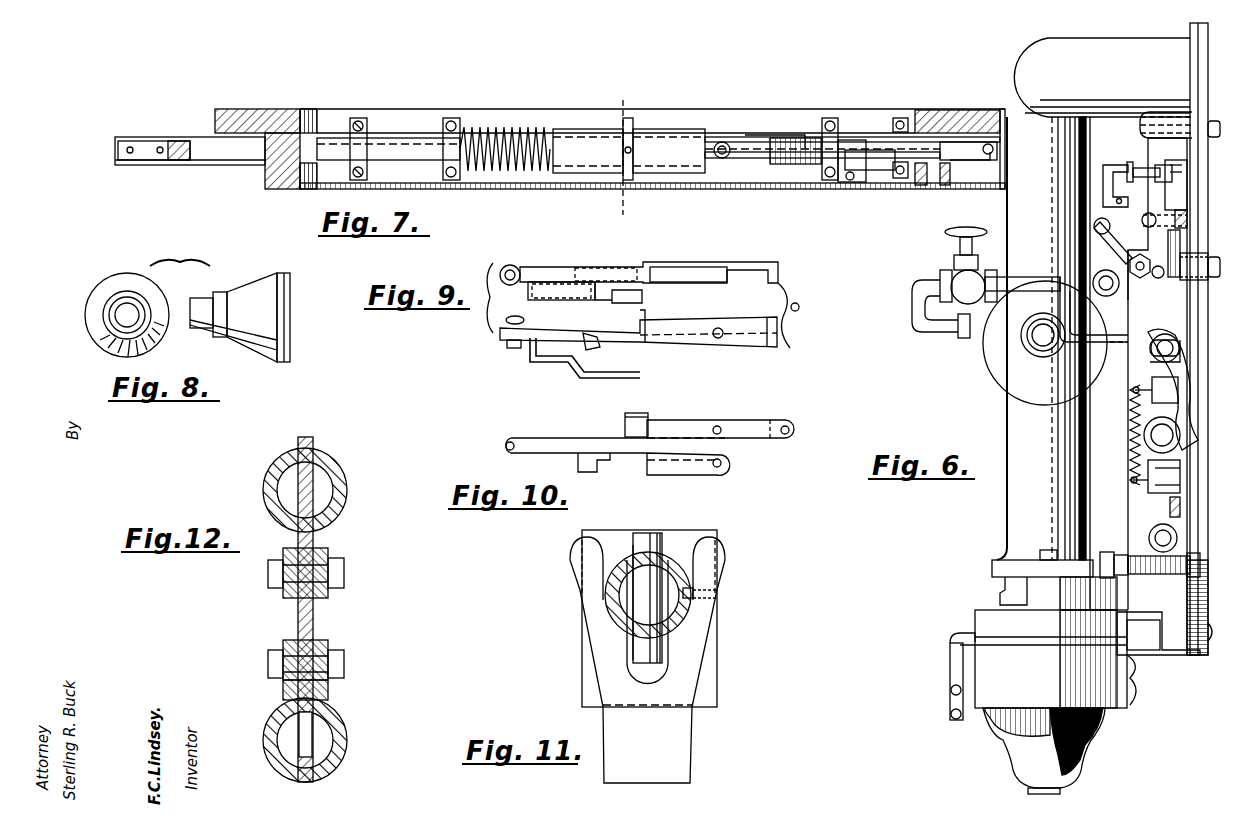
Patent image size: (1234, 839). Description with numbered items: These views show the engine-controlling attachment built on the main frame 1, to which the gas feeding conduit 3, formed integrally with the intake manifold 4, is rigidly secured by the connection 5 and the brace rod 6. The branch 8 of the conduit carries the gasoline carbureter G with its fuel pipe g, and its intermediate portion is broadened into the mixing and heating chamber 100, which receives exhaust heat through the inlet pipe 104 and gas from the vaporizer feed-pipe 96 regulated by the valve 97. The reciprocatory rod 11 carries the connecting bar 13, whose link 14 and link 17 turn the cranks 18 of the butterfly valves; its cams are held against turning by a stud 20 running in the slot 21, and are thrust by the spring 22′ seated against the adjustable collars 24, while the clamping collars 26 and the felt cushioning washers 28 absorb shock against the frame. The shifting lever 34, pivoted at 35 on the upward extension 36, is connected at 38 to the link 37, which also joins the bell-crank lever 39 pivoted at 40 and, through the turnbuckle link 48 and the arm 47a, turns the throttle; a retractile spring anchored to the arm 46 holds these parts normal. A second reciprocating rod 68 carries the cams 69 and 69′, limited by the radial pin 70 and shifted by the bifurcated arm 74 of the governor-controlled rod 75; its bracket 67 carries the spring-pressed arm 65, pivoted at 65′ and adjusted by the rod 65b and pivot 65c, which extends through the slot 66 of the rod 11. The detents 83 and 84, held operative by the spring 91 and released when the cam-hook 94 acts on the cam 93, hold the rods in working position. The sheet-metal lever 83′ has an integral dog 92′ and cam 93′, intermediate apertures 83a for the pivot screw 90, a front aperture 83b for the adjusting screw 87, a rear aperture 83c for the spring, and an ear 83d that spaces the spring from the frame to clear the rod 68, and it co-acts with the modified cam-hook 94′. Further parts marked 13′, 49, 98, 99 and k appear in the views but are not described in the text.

In FIG. 7, the main frame structure 1 is at (268, 118).
In FIG. 6, the main frame structure 1 is at (1195, 320).
In FIG. 6, the gas feeding conduit 3 is at (1005, 413).
In FIG. 6, the intake manifold 4 is at (1102, 77).
In FIG. 6, the connection 5 is at (1127, 640).
In FIG. 6, the brace rod 6 is at (1116, 241).
In FIG. 6, the branch of conduit 8 is at (1062, 363).
In FIG. 12, the reciprocatory rod 11 is at (343, 480).
In FIG. 6, the reciprocatory rod 11 is at (1158, 365).
In FIG. 6, the connecting bar 13 is at (1190, 395).
In FIG. 6, the pipe 13′ is at (1103, 348).
In FIG. 7, the link 14 is at (621, 155).
In FIG. 6, the link 14 is at (1128, 555).
In FIG. 6, the link 17 is at (1116, 560).
In FIG. 6, the cranks 18 is at (1100, 588).
In FIG. 11, the screw or stud 20 is at (698, 598).
In FIG. 11, the slot or groove 21 is at (686, 585).
In FIG. 7, the spring 22′ is at (492, 126).
In FIG. 7, the collars or shoulders 24 is at (443, 150).
In FIG. 7, the clamping collars 26 is at (388, 149).
In FIG. 7, the cushioning washers 28 is at (350, 150).
In FIG. 6, the cushioning washers 28 is at (1152, 355).
In FIG. 6, the shifting lever 34 is at (1157, 219).
In FIG. 6, the pivot 35 is at (1140, 127).
In FIG. 6, the upward extension 36 is at (1206, 165).
In FIG. 6, the link 37 is at (1187, 195).
In FIG. 6, the adjustable pivotal connection 38 is at (1143, 220).
In FIG. 6, the bell-crank lever 39 is at (1187, 242).
In FIG. 6, the pivot 40 is at (1147, 276).
In FIG. 6, the arm 46 is at (1170, 507).
In FIG. 6, the throttle arm 47a is at (1103, 188).
In FIG. 6, the turnbuckle link 48 is at (1113, 174).
In FIG. 6, the pin 49 is at (1127, 168).
In FIG. 12, the arm or dog 65 is at (313, 622).
In FIG. 12, the rod 65b is at (328, 552).
In FIG. 12, the pivot 65c is at (344, 570).
In FIG. 12, the pivotal connection 65′ is at (344, 660).
In FIG. 12, the slot 66 is at (313, 443).
In FIG. 7, the bracket 67 is at (138, 145).
In FIG. 12, the bracket 67 is at (328, 686).
In FIG. 7, the reciprocating rod 68 is at (232, 162).
In FIG. 11, the reciprocating rod 68 is at (605, 592).
In FIG. 12, the reciprocating rod 68 is at (345, 722).
In FIG. 6, the reciprocating rod 68 is at (1144, 440).
In FIG. 7, the cam 69 is at (669, 151).
In FIG. 11, the cam 69 is at (718, 686).
In FIG. 7, the cam 69′ is at (588, 151).
In FIG. 7, the pin or stop 70 is at (632, 142).
In FIG. 11, the pin or stop 70 is at (650, 537).
In FIG. 11, the bifurcated arm 74 is at (647, 744).
In FIG. 6, the shifting rod 75 is at (1152, 536).
In FIG. 7, the detent 83 is at (750, 146).
In FIG. 6, the detent 83 is at (1192, 410).
In FIG. 9, the sheet metal lever 83′ is at (684, 290).
In FIG. 9, the intermediate apertures 83a is at (716, 340).
In FIG. 10, the intermediate apertures 83a is at (721, 432).
In FIG. 10, the front aperture 83b is at (509, 442).
In FIG. 10, the rear aperture 83c is at (790, 426).
In FIG. 9, the ear 83d is at (801, 315).
In FIG. 10, the ear 83d is at (772, 420).
In FIG. 6, the detent 84 is at (1148, 484).
In FIG. 7, the adjusting screw 87 is at (728, 156).
In FIG. 9, the adjusting screw 87 is at (503, 298).
In FIG. 7, the screw or pivot 90 is at (955, 109).
In FIG. 7, the spring 91 is at (1000, 112).
In FIG. 6, the spring 91 is at (1130, 422).
In FIG. 9, the dog 92′ is at (642, 312).
In FIG. 10, the dog 92′ is at (625, 420).
In FIG. 7, the cam 93 is at (790, 140).
In FIG. 9, the cam 93′ is at (584, 334).
In FIG. 10, the cam 93′ is at (578, 462).
In FIG. 7, the cam-hook 94 is at (840, 152).
In FIG. 9, the cam-hook 94′ is at (548, 360).
In FIG. 6, the feed-pipe 96 is at (912, 300).
In FIG. 6, the valve 97 is at (954, 264).
In FIG. 6, the fitting 98 is at (1119, 290).
In FIG. 6, the pipe 99 is at (1075, 305).
In FIG. 6, the mixing and heating chamber 100 is at (1045, 343).
In FIG. 6, the inlet pipe 104 is at (1026, 343).
In FIG. 6, the gasoline carbureter G is at (1043, 702).
In FIG. 6, the pipe g is at (950, 690).
In FIG. 6, the pivot k is at (950, 713).